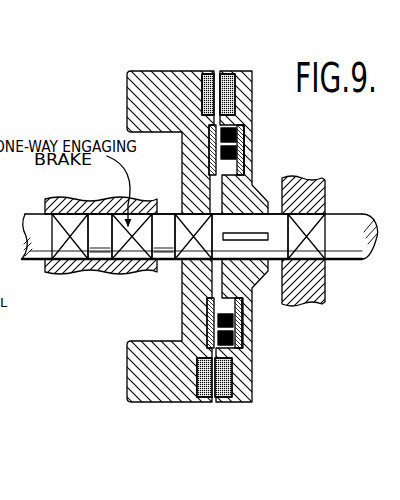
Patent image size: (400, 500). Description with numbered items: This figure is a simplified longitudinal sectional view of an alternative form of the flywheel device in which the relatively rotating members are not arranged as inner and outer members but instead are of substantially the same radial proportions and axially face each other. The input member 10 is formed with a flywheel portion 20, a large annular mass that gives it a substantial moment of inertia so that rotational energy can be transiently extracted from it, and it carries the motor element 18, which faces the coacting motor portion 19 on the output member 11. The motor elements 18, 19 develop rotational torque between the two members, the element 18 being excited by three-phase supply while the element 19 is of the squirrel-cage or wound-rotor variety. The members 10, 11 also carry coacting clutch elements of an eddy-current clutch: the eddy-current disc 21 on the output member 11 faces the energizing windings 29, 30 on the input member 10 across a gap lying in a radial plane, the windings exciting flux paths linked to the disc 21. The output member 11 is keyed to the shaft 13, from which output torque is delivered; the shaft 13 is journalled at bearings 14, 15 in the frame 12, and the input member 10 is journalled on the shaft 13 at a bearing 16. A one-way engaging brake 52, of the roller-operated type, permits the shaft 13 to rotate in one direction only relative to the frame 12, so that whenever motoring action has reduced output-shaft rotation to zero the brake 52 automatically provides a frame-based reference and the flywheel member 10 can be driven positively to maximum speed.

The outer rotatable member 10 is at (180, 165).
The inner rotatable member 11 is at (260, 149).
The frame 12 is at (327, 191).
The shaft 13 is at (362, 254).
The bearing 14 is at (67, 252).
The bearing 15 is at (318, 236).
The bearing 16 is at (188, 253).
The field windings and laminations 18 is at (194, 92).
The armature laminations and windings 19 is at (252, 87).
The flywheel portion 20 is at (147, 74).
The eddy-current disc 21 is at (207, 140).
The energizing winding 29 is at (243, 141).
The energizing winding 30 is at (243, 162).
The one-way engaging brake 52 is at (130, 252).